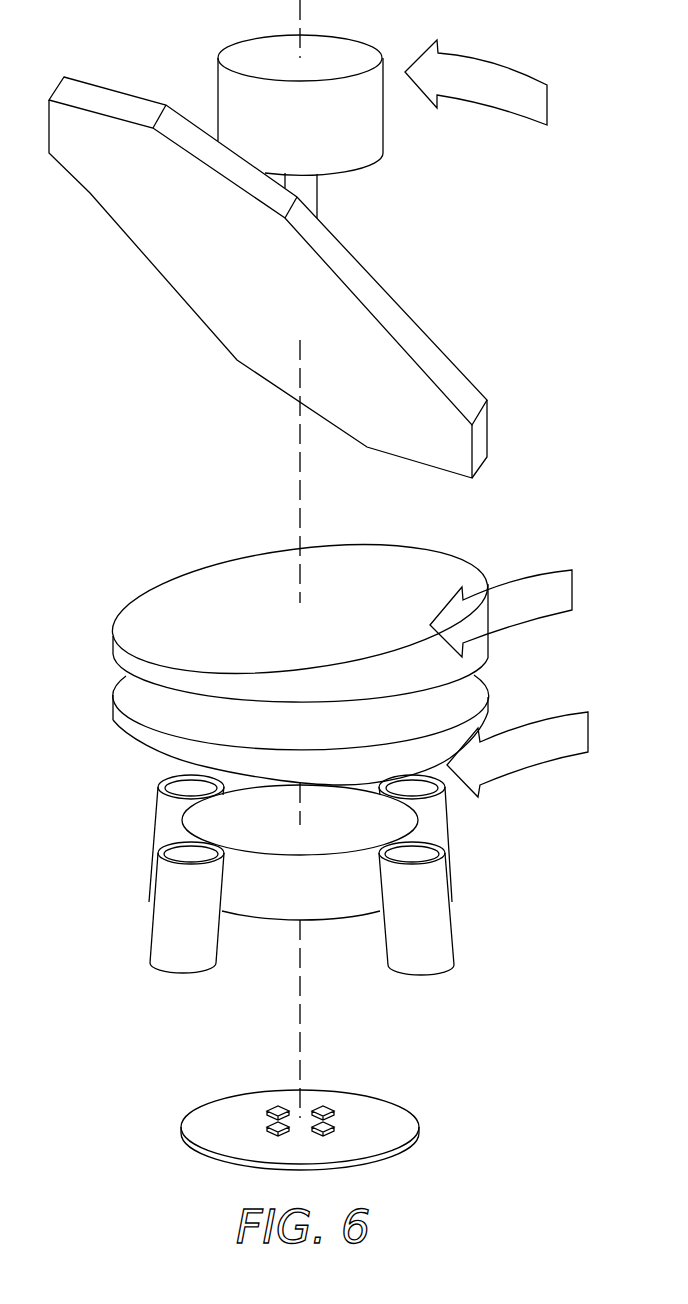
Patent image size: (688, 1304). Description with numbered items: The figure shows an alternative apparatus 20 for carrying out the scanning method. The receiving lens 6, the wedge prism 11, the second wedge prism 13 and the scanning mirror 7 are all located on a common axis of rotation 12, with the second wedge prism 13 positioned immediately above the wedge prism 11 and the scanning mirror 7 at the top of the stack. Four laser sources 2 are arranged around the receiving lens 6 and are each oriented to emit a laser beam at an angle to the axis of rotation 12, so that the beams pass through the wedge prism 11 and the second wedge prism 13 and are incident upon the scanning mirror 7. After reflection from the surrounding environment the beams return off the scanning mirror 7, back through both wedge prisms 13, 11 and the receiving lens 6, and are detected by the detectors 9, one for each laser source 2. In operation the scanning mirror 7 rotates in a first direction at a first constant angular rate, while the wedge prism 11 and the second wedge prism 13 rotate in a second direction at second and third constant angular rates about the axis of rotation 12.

The apparatus 20 is at (130, 385).
The scanning mirror 7 is at (403, 303).
The second wedge prism 13 is at (112, 652).
The wedge prism 11 is at (112, 718).
The laser sources 2 is at (447, 818).
The receiving lens 6 is at (333, 905).
The axis of rotation 12 is at (302, 1012).
The detectors 9 is at (323, 1112).